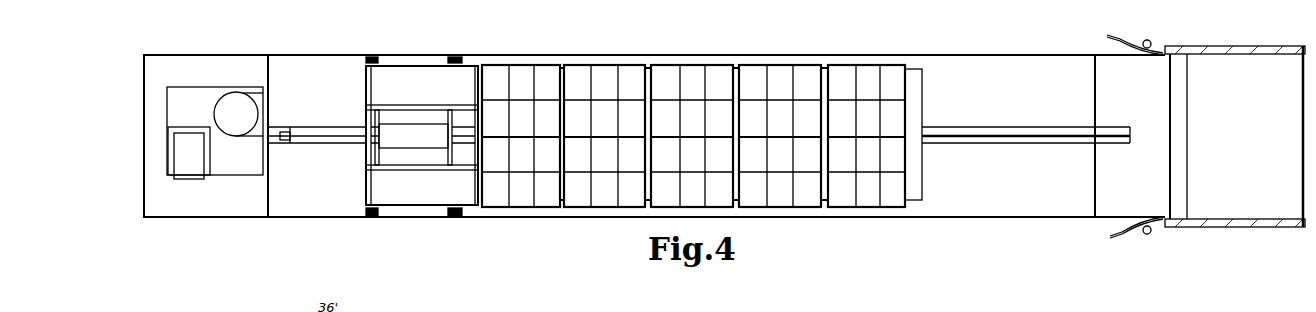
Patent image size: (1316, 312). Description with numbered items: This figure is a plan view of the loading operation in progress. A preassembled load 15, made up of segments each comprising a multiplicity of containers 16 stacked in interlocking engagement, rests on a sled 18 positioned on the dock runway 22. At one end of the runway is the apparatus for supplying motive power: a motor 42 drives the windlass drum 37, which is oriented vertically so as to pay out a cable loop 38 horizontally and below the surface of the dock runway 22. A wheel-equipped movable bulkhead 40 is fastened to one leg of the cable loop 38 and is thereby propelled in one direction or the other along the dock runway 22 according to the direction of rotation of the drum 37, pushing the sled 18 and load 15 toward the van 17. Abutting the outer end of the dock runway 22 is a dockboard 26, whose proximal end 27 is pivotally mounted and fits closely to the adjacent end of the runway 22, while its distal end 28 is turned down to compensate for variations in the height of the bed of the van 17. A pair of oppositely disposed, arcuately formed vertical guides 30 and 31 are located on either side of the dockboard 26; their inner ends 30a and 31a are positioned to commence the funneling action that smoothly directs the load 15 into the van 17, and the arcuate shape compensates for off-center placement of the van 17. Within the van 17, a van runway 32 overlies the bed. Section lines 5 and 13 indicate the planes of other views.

The section line 5- 5 is at (378, 218).
The section line 13- 13 is at (1201, 163).
The preassembled load 15 is at (531, 210).
The containers 16 is at (527, 70).
The van 17 is at (1217, 228).
The sled 18 is at (913, 99).
The dock runway 22 is at (1032, 108).
The dockboard 26 is at (1142, 109).
The proximal end 27 is at (1090, 192).
The distal end 28 is at (1187, 105).
The vertical guide 30 is at (1130, 233).
The inner end 30a is at (1110, 237).
The vertical guide 31 is at (1130, 42).
The inner end 31a is at (1107, 36).
The van runway 32 is at (1276, 210).
The drum 37 is at (248, 124).
The cable loop 38 is at (948, 134).
The movable bulkhead 40 is at (412, 209).
The motor 42 is at (200, 163).